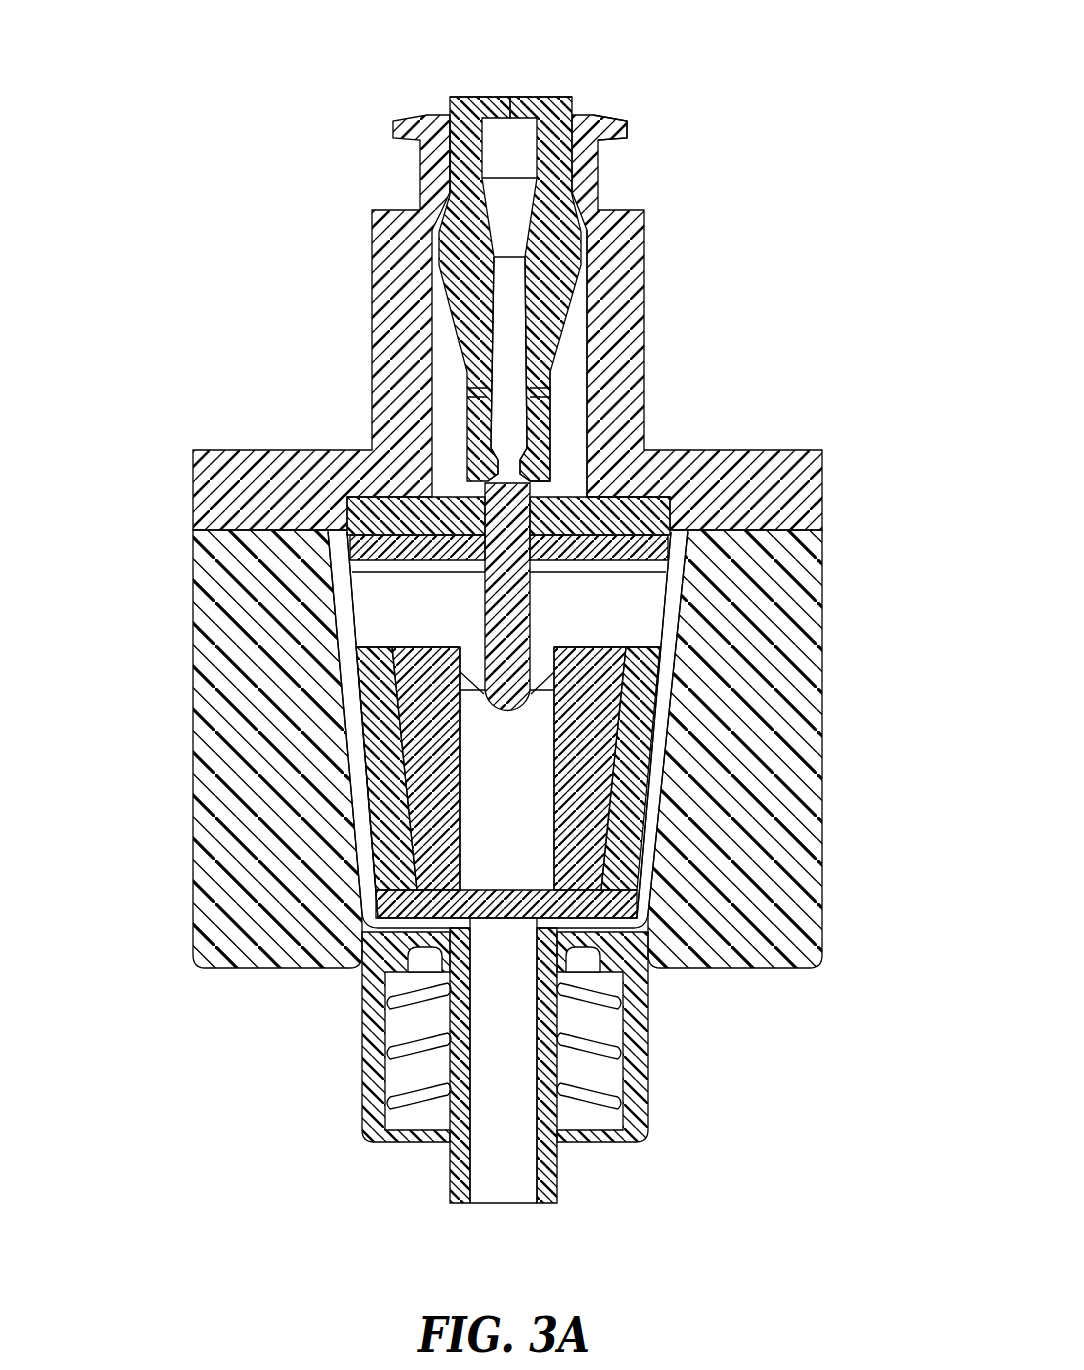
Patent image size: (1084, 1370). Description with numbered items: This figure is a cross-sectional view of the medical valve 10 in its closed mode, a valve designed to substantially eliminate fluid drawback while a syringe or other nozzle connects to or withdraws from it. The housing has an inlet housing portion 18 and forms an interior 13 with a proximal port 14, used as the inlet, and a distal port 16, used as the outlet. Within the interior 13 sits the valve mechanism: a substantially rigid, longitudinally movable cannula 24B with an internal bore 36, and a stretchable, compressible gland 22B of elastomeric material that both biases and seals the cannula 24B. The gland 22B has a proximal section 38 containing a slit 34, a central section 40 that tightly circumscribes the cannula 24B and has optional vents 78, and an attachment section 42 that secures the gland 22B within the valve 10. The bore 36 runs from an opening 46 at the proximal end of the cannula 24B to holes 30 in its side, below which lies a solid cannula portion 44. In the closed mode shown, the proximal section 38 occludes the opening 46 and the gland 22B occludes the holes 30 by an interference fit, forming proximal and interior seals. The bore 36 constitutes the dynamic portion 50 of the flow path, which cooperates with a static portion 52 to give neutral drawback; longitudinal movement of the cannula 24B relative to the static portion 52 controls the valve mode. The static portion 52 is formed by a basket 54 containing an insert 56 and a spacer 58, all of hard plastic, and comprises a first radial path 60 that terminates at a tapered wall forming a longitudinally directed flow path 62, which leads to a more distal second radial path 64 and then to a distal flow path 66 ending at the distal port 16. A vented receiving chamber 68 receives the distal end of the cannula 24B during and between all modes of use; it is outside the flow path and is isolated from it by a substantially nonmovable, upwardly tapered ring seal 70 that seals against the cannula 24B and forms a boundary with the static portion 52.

The medical valve 10 is at (794, 156).
The interior 13 is at (573, 347).
The proximal port 14 is at (585, 94).
The distal port 16 is at (527, 1224).
The inlet housing portion 18 is at (823, 478).
The gland 22B is at (578, 285).
The cannula 24B is at (470, 248).
The holes 30 is at (478, 460).
The slit 34 is at (512, 74).
The internal bore 36 is at (526, 352).
The proximal section 38 is at (605, 137).
The central section 40 is at (548, 433).
The attachment section 42 is at (665, 527).
The solid cannula portion 44 is at (484, 585).
The opening 46 is at (445, 148).
The dynamic portion 50 is at (507, 343).
The static portion 52 is at (835, 547).
The basket 54 is at (383, 842).
The insert 56 is at (420, 805).
The spacer 58 is at (353, 540).
The first radial path 60 is at (411, 627).
The longitudinally directed flow path 62 is at (430, 770).
The second radial path 64 is at (387, 940).
The distal flow path 66 is at (486, 1092).
The receiving chamber 68 is at (489, 804).
The ring seal 70 is at (460, 688).
The vents 78 is at (577, 396).